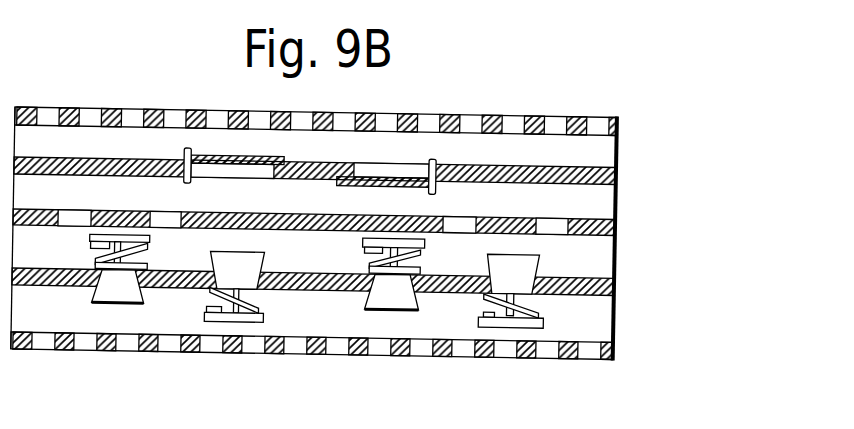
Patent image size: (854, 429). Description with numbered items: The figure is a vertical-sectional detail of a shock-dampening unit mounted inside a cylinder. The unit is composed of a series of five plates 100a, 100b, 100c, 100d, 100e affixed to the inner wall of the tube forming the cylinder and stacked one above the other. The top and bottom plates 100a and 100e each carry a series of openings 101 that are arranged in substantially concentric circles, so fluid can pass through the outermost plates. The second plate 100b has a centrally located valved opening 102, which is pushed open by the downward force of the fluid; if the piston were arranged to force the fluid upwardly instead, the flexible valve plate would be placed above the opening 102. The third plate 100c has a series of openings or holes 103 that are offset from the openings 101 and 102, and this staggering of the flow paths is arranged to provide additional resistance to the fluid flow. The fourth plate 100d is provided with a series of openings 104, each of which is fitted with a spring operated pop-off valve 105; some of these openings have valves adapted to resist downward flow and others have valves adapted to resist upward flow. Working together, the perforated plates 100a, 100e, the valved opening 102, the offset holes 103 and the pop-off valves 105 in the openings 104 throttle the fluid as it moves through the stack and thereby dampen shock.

The top plate 100a is at (619, 122).
The plate 100b is at (620, 173).
The plate 100c is at (620, 227).
The plate 100d is at (620, 283).
The bottom plate 100e is at (620, 345).
The openings 101 is at (468, 345).
The valved opening 102 is at (378, 164).
The openings or holes 103 is at (153, 211).
The openings 104 is at (100, 292).
The spring operated pop-off valves 105 is at (227, 265).